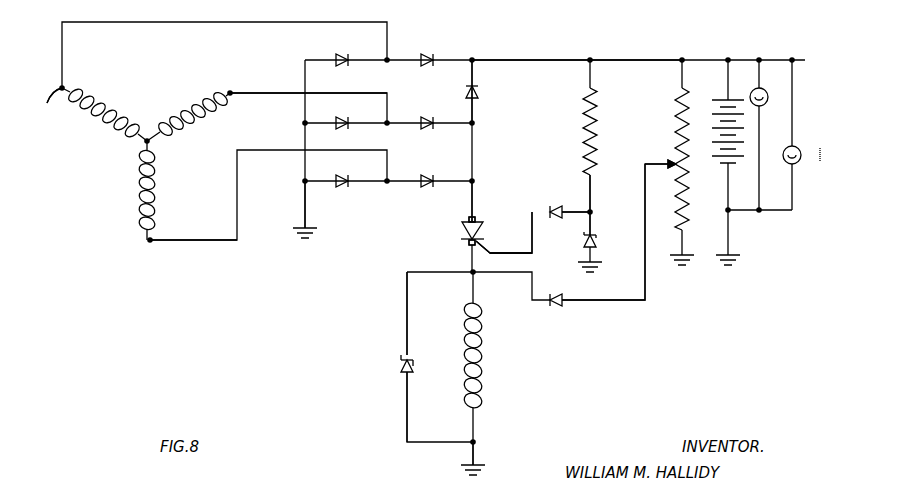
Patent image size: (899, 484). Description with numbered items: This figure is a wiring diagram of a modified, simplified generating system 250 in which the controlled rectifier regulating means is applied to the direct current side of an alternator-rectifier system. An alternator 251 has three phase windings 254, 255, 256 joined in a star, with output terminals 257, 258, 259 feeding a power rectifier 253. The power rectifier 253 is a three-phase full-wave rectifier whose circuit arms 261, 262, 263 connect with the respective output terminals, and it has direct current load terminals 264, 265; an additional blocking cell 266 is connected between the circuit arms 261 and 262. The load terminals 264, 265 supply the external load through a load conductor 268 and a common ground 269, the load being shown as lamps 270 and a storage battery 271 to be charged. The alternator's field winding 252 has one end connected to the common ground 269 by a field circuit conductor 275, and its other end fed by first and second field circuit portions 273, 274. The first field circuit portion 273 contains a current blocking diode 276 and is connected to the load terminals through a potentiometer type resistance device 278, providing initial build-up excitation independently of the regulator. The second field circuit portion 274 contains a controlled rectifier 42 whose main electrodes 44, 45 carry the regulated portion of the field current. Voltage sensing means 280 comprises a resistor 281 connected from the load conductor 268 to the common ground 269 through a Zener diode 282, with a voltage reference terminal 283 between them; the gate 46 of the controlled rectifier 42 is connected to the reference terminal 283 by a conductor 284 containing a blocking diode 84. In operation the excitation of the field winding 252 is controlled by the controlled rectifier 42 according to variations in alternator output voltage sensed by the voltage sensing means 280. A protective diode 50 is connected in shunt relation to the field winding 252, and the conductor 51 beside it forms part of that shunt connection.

The alternator 251 is at (172, 87).
The phase winding 254 is at (90, 118).
The phase winding 255 is at (205, 115).
The phase winding 256 is at (155, 200).
The output terminal 257 is at (46, 109).
The output terminal 258 is at (308, 79).
The output terminal 259 is at (150, 240).
The power rectifier 253 is at (380, 50).
The circuit arm 261 is at (400, 58).
The circuit arm 262 is at (400, 121).
The circuit arm 263 is at (400, 179).
The direct current load terminal 264 is at (472, 58).
The generating system 250 is at (512, 58).
The blocking cell 266 is at (484, 96).
The load conductor 268 is at (620, 58).
The direct current load terminal 265 is at (298, 184).
The common ground 269 is at (300, 230).
The second field circuit portion 274 is at (467, 203).
The controlled rectifier 42 is at (460, 232).
The main electrode 44 is at (474, 220).
The main electrode 45 is at (466, 243).
The gate 46 is at (483, 243).
The blocking diode 84 is at (550, 208).
The voltage sensing means 280 is at (585, 195).
The resistor 281 is at (595, 158).
The voltage reference terminal 283 is at (595, 210).
The Zener diode 282 is at (598, 237).
The conductor 284 is at (533, 242).
The potentiometer type resistance device 278 is at (676, 136).
The first field circuit portion 273 is at (645, 285).
The current blocking diode 276 is at (560, 310).
The field winding 252 is at (483, 365).
The diode 50 is at (408, 330).
The conductor 51 is at (398, 366).
The field circuit conductor 275 is at (480, 455).
The storage battery 271 is at (735, 98).
The lamps 270 is at (770, 108).